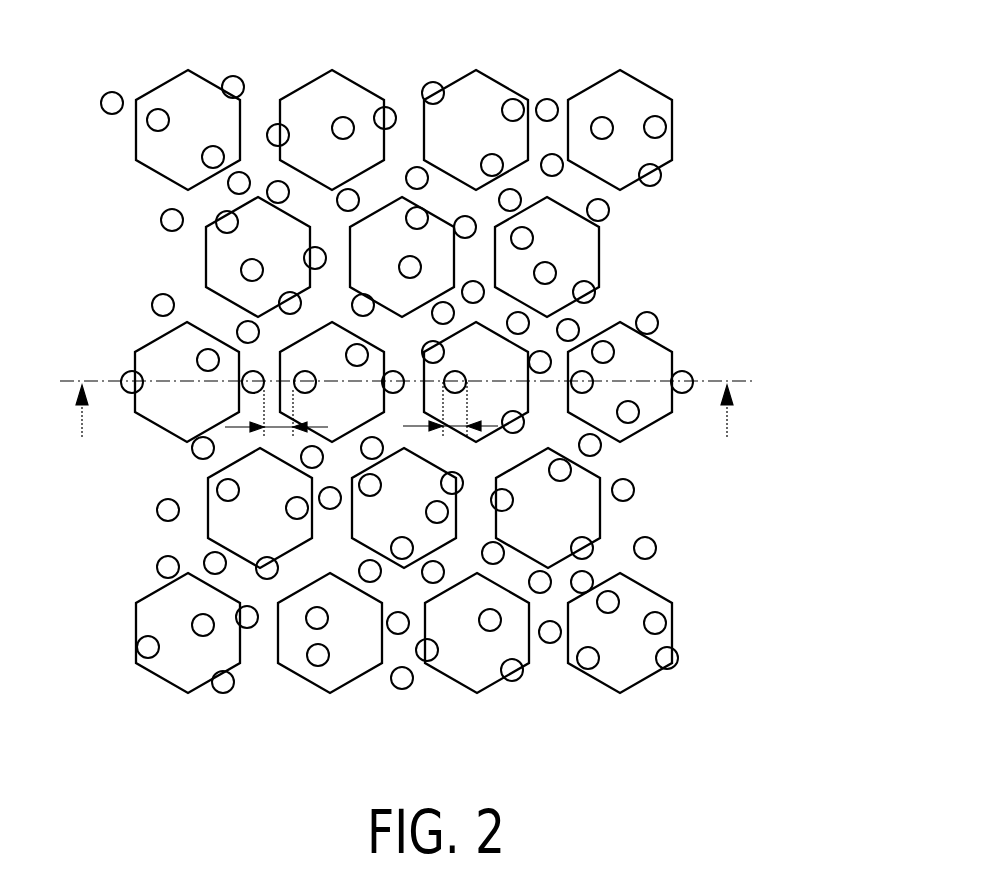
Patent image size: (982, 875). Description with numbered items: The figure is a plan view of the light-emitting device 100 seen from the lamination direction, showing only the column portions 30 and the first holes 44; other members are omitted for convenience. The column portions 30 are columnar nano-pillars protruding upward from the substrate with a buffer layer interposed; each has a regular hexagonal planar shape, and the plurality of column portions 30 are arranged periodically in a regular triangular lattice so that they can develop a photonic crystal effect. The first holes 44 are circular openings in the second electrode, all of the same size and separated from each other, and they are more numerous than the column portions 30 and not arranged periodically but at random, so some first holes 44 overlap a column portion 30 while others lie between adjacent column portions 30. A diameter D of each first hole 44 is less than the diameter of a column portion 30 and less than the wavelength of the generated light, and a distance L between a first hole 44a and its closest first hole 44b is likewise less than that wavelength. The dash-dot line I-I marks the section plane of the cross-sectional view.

The light-emitting device 100 is at (740, 38).
The column portion 30 is at (186, 100).
The first hole 44 is at (158, 116).
The first hole 44a is at (255, 378).
The first hole 44b is at (306, 378).